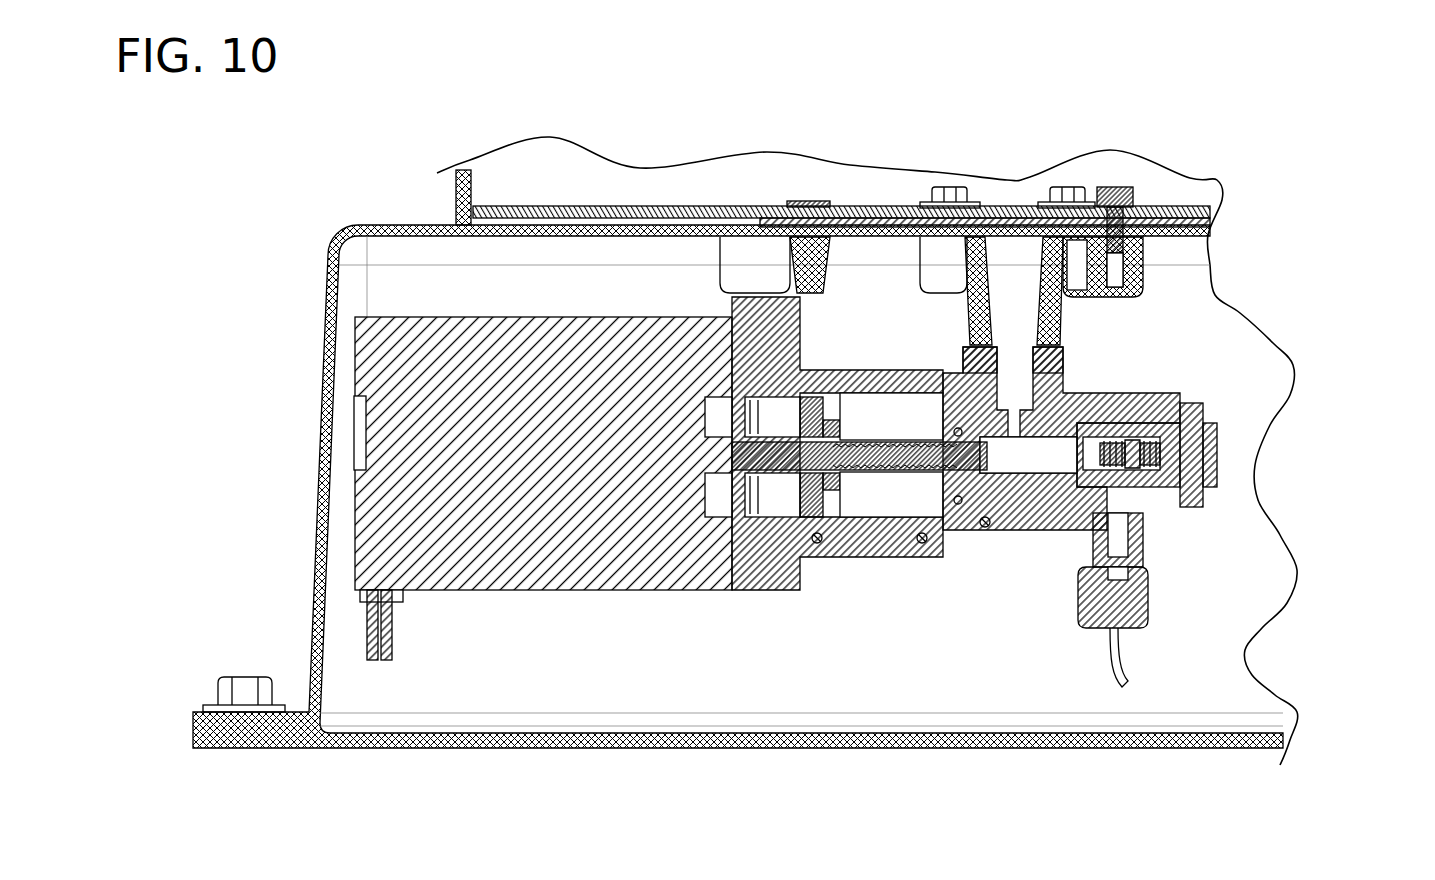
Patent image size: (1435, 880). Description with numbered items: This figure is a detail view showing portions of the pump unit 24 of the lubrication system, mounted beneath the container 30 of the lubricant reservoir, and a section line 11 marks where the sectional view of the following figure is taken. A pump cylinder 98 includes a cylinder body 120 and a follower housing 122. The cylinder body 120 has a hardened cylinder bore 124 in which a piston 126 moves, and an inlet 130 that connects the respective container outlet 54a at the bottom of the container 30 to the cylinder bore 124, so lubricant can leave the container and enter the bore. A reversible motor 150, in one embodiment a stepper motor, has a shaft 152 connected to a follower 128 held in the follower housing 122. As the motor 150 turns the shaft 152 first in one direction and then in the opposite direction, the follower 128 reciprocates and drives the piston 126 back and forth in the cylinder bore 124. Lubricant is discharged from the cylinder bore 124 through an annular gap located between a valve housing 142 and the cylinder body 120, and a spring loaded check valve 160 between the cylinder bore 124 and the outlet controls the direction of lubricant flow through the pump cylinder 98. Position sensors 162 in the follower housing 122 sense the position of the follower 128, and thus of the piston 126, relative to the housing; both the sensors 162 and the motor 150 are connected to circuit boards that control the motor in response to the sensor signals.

The pump unit 24 is at (305, 601).
The container 30 is at (457, 199).
The reversible motor 150 is at (355, 392).
The container outlet 54a is at (1018, 226).
The inlet 130 is at (1023, 343).
The pump cylinder 98 is at (815, 566).
The shaft 152 is at (790, 470).
The follower 128 is at (857, 518).
The follower housing 122 is at (866, 515).
The cylinder body 120 is at (1160, 397).
The cylinder bore 124 is at (1050, 468).
The piston 126 is at (878, 457).
The spring loaded check valve 160 is at (1087, 427).
The valve housing 142 is at (1187, 424).
The position sensors 162 is at (812, 545).
The section line 11 is at (1150, 90).